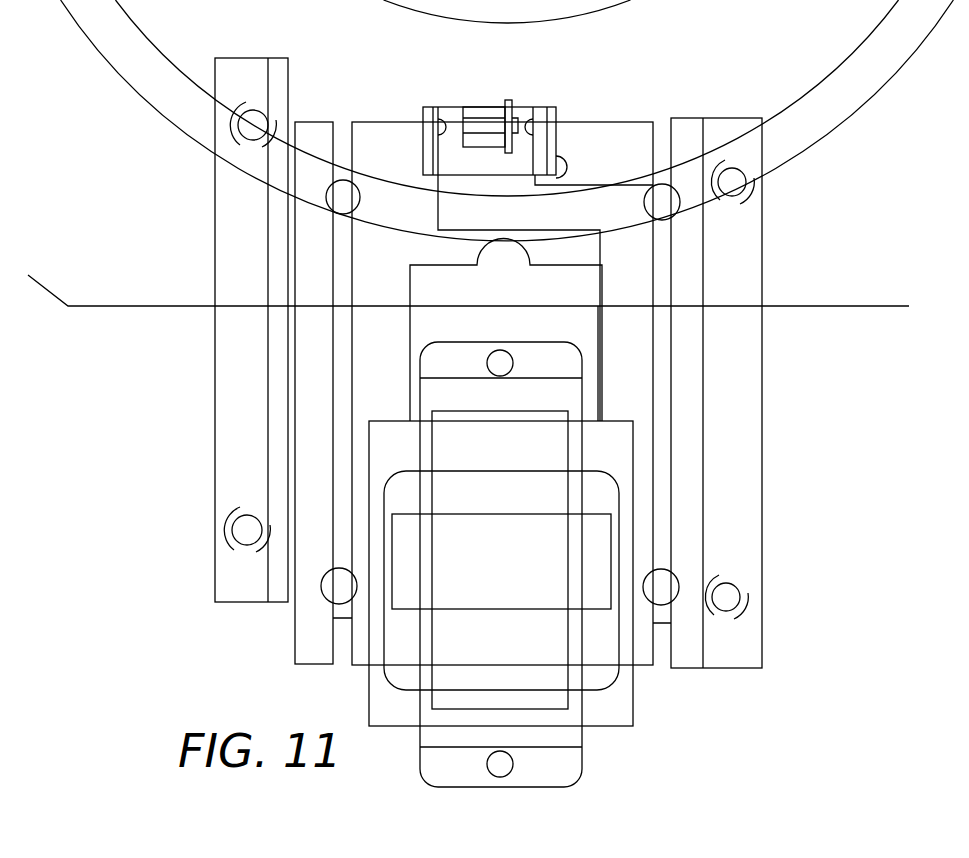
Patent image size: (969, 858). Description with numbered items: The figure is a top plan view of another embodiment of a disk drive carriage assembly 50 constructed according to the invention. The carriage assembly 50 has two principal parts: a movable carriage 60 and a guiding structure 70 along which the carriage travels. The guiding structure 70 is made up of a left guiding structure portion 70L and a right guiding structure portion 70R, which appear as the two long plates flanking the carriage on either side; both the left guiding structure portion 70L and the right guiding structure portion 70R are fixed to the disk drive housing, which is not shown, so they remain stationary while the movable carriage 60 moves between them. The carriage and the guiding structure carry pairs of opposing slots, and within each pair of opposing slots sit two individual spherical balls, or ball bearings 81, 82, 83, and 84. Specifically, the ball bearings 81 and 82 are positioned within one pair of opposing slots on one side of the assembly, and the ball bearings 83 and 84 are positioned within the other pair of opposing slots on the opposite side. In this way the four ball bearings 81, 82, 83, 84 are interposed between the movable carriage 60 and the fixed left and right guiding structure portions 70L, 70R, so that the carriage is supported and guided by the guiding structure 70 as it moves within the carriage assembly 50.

The carriage assembly 50 is at (784, 247).
The movable carriage 60 is at (568, 138).
The guiding structure 70 is at (478, 363).
The left guiding structure portion 70L is at (228, 388).
The right guiding structure portion 70R is at (752, 410).
The ball bearing 81 is at (338, 590).
The ball bearing 82 is at (343, 197).
The ball bearing 83 is at (661, 587).
The ball bearing 84 is at (661, 200).